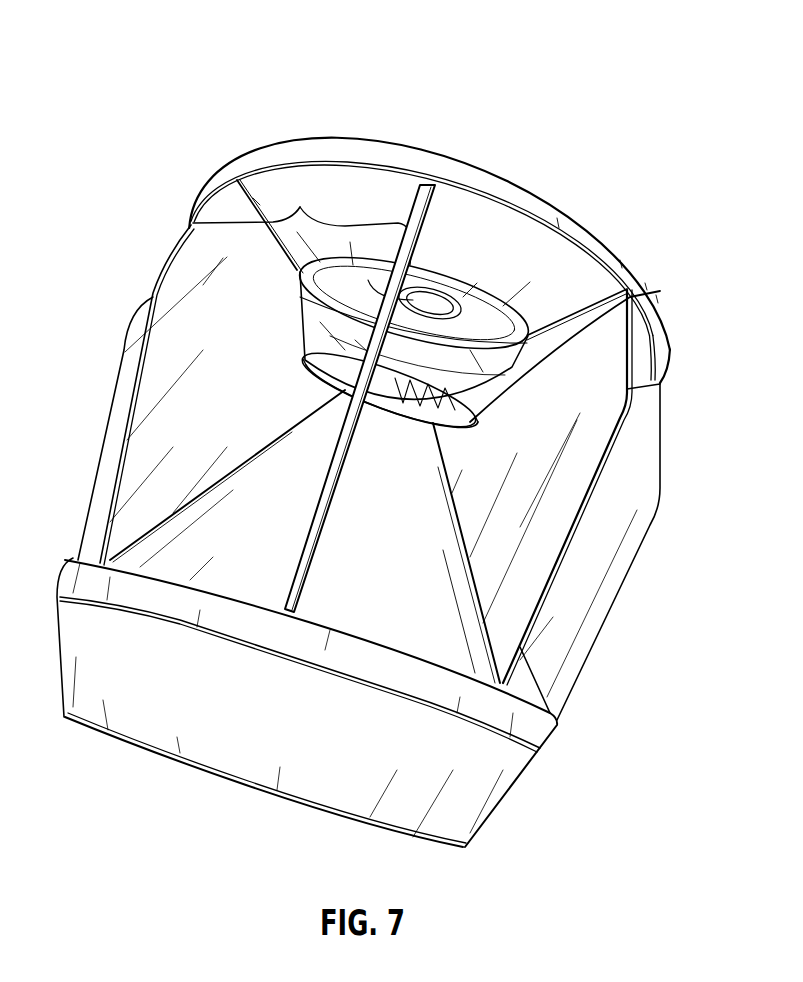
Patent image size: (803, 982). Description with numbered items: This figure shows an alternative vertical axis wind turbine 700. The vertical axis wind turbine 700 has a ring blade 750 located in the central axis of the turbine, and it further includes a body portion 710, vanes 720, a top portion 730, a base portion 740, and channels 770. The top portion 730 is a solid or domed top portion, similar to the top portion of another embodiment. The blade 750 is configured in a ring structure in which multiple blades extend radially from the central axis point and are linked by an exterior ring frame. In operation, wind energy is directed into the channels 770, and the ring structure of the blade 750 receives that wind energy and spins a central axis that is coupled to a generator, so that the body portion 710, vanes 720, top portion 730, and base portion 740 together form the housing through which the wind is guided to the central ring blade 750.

The vertical axis wind turbine 700 is at (203, 52).
The body portion 710 is at (468, 635).
The vanes 720 is at (575, 449).
The top portion 730 is at (500, 187).
The base portion 740 is at (493, 815).
The ring blade 750 is at (660, 291).
The channels 770 is at (300, 207).